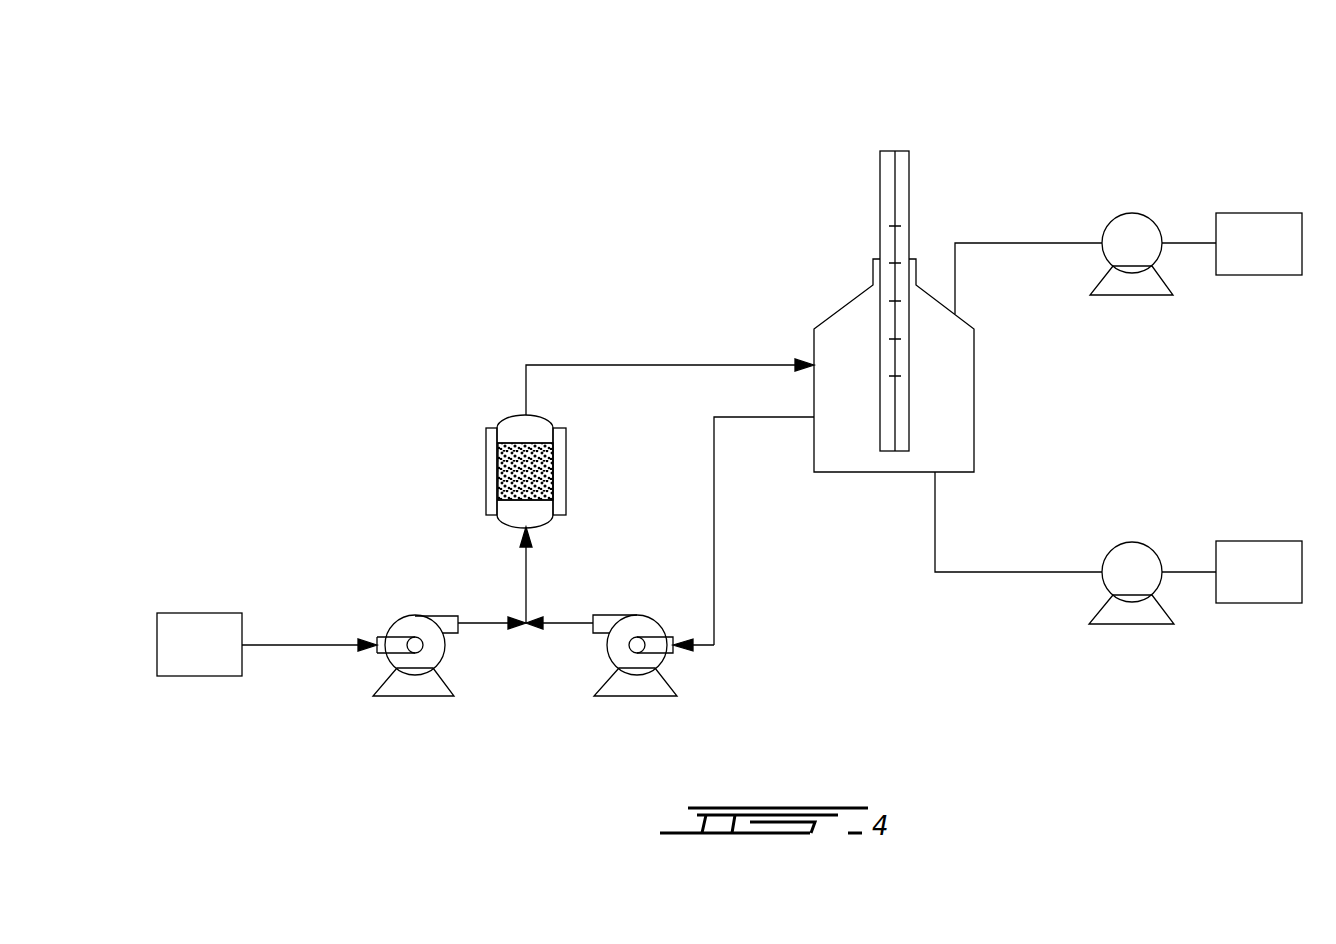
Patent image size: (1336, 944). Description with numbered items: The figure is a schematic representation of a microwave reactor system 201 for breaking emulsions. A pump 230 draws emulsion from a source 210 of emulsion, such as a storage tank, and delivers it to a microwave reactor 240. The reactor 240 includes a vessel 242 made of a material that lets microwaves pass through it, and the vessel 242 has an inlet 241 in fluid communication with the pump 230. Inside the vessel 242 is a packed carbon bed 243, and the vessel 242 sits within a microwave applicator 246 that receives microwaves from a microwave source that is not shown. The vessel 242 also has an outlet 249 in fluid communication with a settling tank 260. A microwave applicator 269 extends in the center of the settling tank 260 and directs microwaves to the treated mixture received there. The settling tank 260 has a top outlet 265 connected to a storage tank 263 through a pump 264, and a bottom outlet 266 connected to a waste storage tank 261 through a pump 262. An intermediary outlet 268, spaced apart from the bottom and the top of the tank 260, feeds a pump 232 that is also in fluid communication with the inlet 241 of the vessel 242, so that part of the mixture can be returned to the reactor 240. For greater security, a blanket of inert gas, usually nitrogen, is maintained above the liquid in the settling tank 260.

The microwave reactor system 201 is at (462, 142).
The source of emulsion 210 is at (198, 613).
The pump 230 is at (414, 665).
The pump 232 is at (660, 663).
The microwave reactor 240 is at (568, 481).
The inlet 241 is at (520, 545).
The vessel 242 is at (482, 526).
The packed carbon bed 243 is at (505, 470).
The microwave applicator 246 is at (563, 456).
The outlet 249 is at (526, 415).
The settling tank 260 is at (927, 341).
The waste storage tank 261 is at (1257, 603).
The pump 262 is at (1146, 545).
The storage tank 263 is at (1257, 275).
The pump 264 is at (1148, 217).
The top outlet 265 is at (955, 312).
The bottom outlet 266 is at (936, 474).
The intermediary outlet 268 is at (807, 421).
The microwave applicator 269 is at (909, 172).